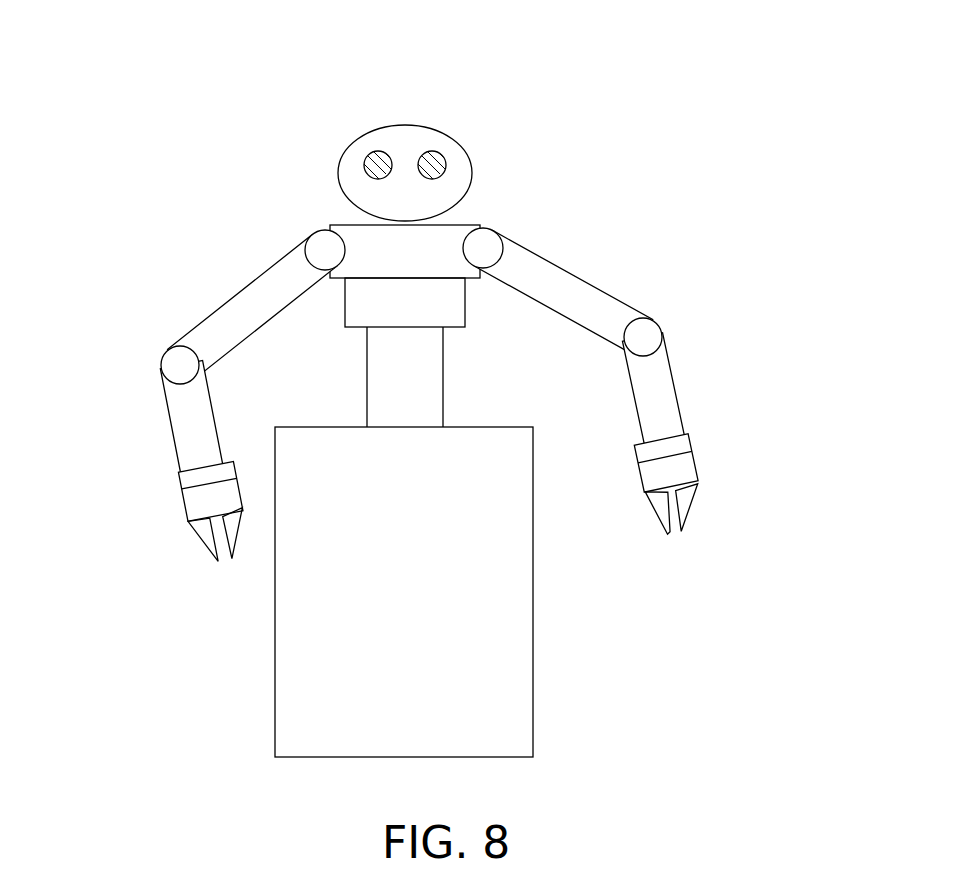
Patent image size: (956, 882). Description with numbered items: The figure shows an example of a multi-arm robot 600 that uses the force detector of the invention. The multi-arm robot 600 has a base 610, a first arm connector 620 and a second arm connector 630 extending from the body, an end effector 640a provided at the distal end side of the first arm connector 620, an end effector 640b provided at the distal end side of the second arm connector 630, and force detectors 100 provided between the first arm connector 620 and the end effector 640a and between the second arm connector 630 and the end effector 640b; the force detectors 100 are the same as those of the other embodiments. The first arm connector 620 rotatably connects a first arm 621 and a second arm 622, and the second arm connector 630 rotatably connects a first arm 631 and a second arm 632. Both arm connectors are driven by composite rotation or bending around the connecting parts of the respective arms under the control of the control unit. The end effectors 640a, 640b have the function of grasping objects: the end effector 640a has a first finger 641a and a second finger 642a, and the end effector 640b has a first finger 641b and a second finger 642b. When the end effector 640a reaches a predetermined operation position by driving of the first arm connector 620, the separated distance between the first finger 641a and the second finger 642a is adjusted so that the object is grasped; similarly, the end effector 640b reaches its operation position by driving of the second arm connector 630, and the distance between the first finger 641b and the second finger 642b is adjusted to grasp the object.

The multi-arm robot 600 is at (578, 86).
The base 610 is at (523, 645).
The first arm connector 620 is at (97, 300).
The first arm 621 is at (181, 405).
The second arm 622 is at (204, 330).
The second arm connector 630 is at (758, 260).
The first arm 631 is at (655, 382).
The second arm 632 is at (611, 310).
The force detector 100 is at (181, 482).
The end effector 640a is at (107, 528).
The first finger 641a is at (210, 546).
The second finger 642a is at (232, 560).
The end effector 640b is at (793, 562).
The first finger 641b is at (686, 511).
The second finger 642b is at (672, 534).